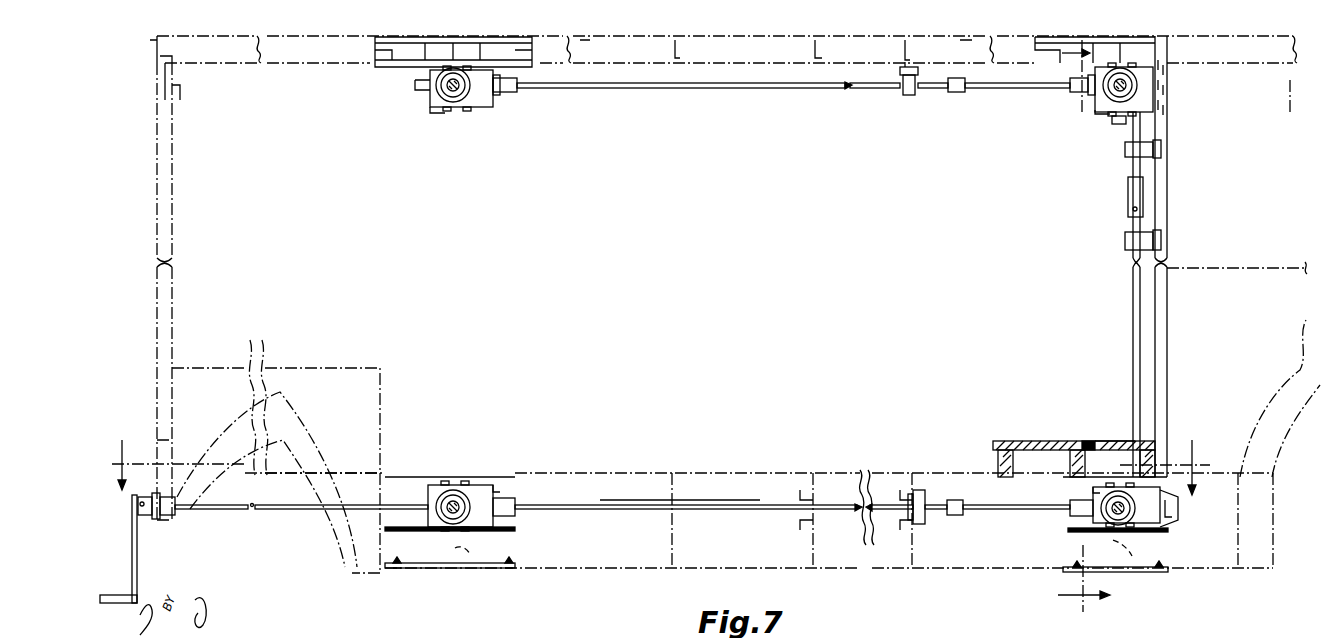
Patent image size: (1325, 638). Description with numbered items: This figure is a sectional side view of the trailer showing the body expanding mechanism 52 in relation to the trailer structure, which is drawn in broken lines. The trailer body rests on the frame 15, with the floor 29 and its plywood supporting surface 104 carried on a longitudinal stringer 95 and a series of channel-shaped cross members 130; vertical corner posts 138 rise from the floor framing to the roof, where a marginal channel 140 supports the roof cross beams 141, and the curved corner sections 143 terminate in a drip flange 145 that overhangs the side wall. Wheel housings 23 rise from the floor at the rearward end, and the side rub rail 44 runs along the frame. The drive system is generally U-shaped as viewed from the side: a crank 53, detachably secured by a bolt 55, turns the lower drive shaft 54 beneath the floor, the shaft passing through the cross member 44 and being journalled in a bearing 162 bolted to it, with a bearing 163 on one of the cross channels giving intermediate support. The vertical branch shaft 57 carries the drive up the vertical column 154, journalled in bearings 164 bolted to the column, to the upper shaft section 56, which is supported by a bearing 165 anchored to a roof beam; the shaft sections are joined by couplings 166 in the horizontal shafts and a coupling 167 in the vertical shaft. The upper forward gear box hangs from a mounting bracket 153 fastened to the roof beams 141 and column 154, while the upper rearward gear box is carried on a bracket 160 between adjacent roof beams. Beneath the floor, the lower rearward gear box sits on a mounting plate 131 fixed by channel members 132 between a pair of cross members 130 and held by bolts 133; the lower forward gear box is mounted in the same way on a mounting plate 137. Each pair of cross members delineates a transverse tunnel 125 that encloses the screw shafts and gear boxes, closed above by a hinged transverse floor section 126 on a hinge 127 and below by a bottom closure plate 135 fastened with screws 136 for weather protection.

The frame 15 is at (637, 568).
The wheel housing 23 is at (343, 460).
The floor 29 is at (1038, 441).
The rub rail 44 is at (158, 445).
The body expanding mechanism 52 is at (710, 500).
The crank 53 is at (132, 540).
The drive shaft 54 is at (315, 509).
The bolt 55 is at (145, 515).
The upper shaft section 56 is at (762, 88).
The vertical branch shaft 57 is at (1133, 302).
The longitudinal stringer 95 is at (1013, 463).
The supporting surface 104 is at (1002, 441).
The transverse tunnel 125 is at (1120, 460).
The transverse floor section 126 is at (1120, 436).
The hinge 127 is at (1073, 441).
The cross member 130 is at (515, 541).
The mounting plate 131 is at (515, 525).
The channel member 132 is at (470, 560).
The bolt 133 is at (430, 540).
The bottom closure plate 135 is at (435, 568).
The screw 136 is at (395, 572).
The mounting plate 137 is at (1160, 530).
The vertical corner post 138 is at (172, 228).
The marginal channel 140 is at (175, 92).
The cross beam 141 is at (900, 45).
The curved corner section 143 is at (158, 40).
The drip flange 145 is at (160, 60).
The mounting bracket 153 is at (1072, 82).
The vertical column 154 is at (1167, 208).
The bracket 160 is at (385, 52).
The bearing 162 is at (170, 515).
The bearing 163 is at (920, 524).
The bearing 164 is at (1125, 150).
The bearing 165 is at (908, 95).
The coupling 166 is at (957, 92).
The coupling 167 is at (1128, 200).